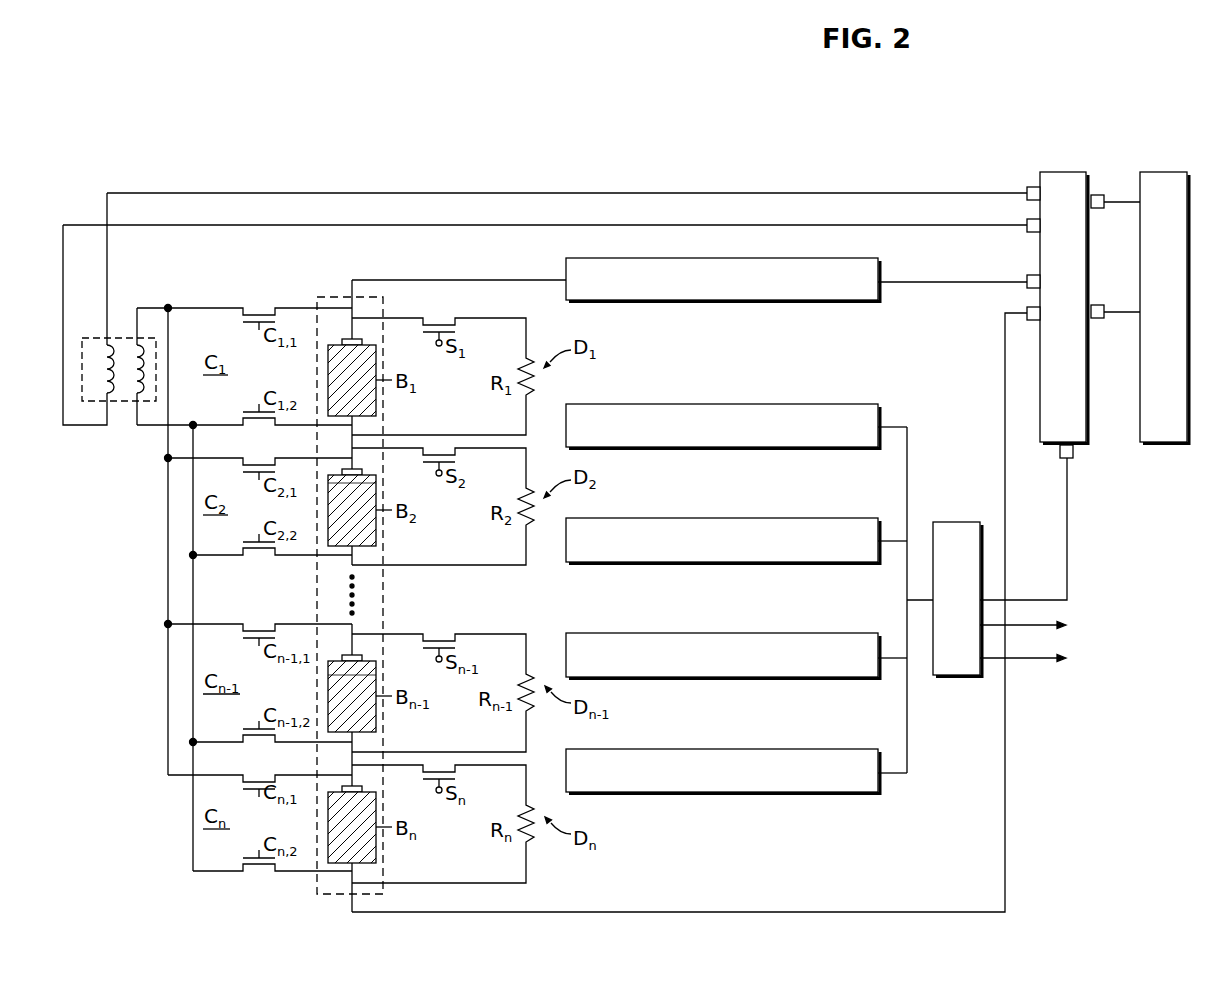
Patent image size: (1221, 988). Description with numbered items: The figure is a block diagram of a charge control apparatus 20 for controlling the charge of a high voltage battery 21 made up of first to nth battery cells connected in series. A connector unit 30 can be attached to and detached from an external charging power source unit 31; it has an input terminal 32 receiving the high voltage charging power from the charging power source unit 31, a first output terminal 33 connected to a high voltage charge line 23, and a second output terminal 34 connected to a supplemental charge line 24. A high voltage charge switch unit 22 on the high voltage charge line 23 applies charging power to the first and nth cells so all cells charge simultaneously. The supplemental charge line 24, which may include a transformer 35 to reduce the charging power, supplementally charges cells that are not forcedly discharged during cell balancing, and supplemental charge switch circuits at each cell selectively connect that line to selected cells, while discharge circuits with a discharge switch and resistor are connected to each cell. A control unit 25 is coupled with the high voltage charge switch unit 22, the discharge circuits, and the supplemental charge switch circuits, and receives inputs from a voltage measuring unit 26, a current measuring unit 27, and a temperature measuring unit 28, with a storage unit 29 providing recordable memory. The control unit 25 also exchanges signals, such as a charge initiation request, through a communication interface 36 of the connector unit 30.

The charge control apparatus 20 is at (156, 159).
The high voltage battery 21 is at (335, 297).
The high voltage charge switch unit 22 is at (836, 300).
The high voltage charge line 23 is at (916, 282).
The supplemental charge line 24 is at (340, 225).
The control unit 25 is at (957, 522).
The voltage measuring unit 26 is at (838, 404).
The current measuring unit 27 is at (838, 518).
The temperature measuring unit 28 is at (838, 633).
The storage unit 29 is at (838, 749).
The connector unit 30 is at (1065, 172).
The charging power source unit 31 is at (1165, 172).
The input terminal 32 is at (1103, 208).
The first output terminal 33 is at (1027, 313).
The second output terminal 34 is at (1027, 226).
The transformer 35 is at (82, 368).
The communication interface 36 is at (1073, 452).